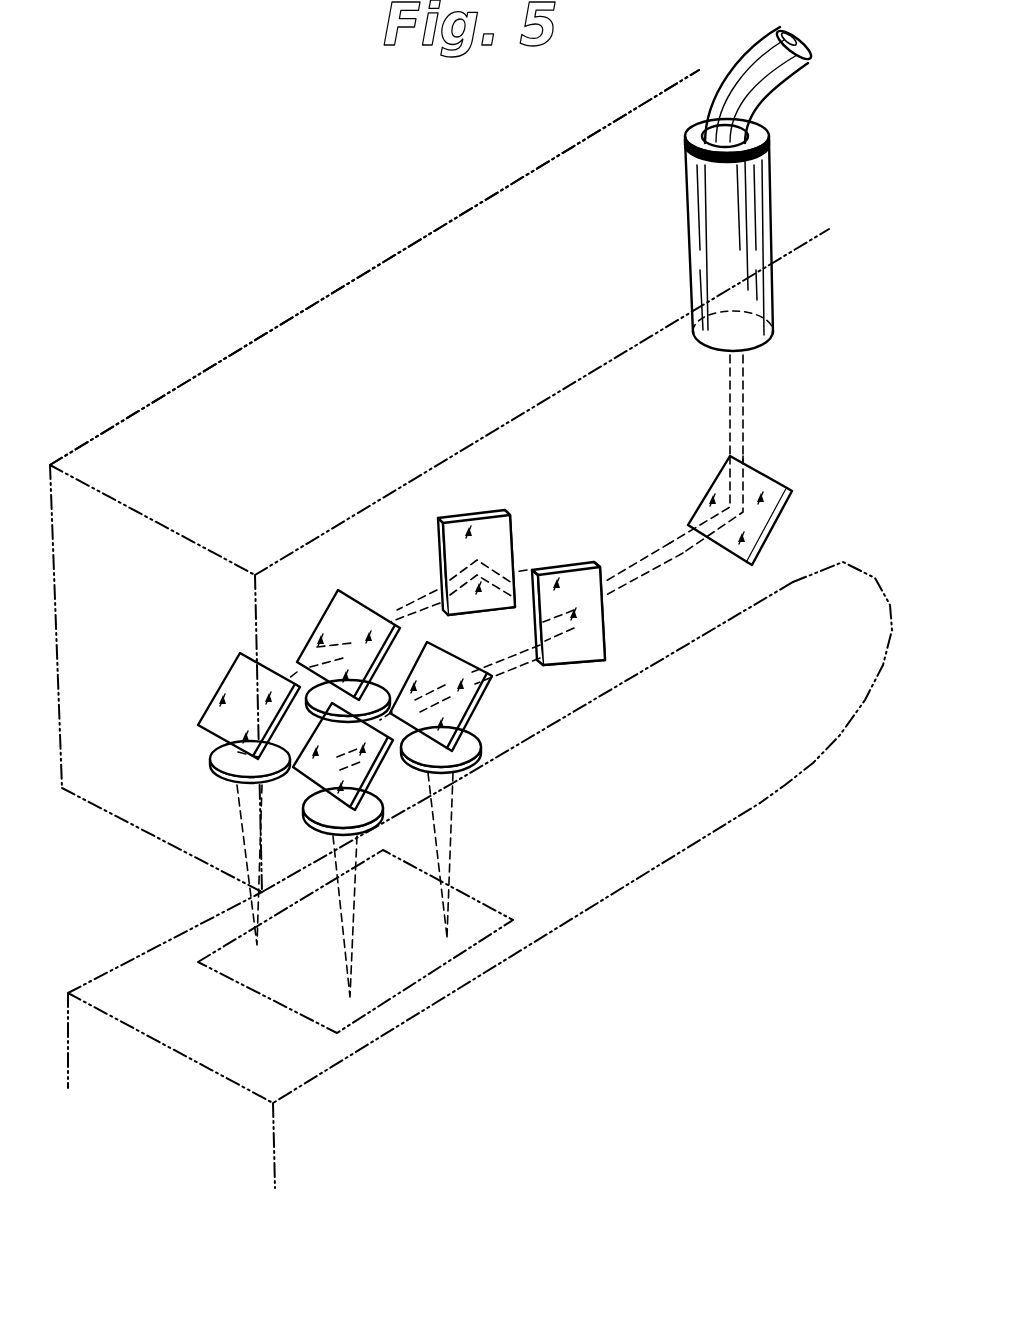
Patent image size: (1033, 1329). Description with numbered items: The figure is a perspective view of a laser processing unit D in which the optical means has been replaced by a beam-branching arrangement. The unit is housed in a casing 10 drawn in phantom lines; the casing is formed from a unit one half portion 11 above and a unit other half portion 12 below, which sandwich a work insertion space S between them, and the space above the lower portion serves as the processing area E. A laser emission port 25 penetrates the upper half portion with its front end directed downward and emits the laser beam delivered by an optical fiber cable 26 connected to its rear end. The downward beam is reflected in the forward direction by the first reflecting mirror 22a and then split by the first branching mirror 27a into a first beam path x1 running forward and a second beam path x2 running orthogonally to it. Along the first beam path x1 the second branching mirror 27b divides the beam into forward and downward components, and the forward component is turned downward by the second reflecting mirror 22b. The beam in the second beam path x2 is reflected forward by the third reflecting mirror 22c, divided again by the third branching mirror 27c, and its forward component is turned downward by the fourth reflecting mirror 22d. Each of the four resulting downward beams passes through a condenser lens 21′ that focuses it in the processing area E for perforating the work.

The laser processing unit D is at (401, 170).
The casing 10 is at (247, 332).
The unit one half portion 11 is at (137, 412).
The unit other half portion 12 is at (226, 1080).
The condenser lens 21′ is at (214, 762).
The first reflecting mirror 22a is at (777, 481).
The second reflecting mirror 22b is at (382, 785).
The third reflecting mirror 22c is at (482, 512).
The fourth reflecting mirror 22d is at (220, 678).
The laser emission port 25 is at (747, 217).
The optical fiber cable 26 is at (775, 100).
The first branching mirror 27a is at (608, 640).
The second branching mirror 27b is at (490, 758).
The third branching mirror 27c is at (350, 594).
The first beam path x1 is at (528, 668).
The second beam path x2 is at (524, 573).
The work insertion space S is at (631, 848).
The processing area E is at (482, 943).